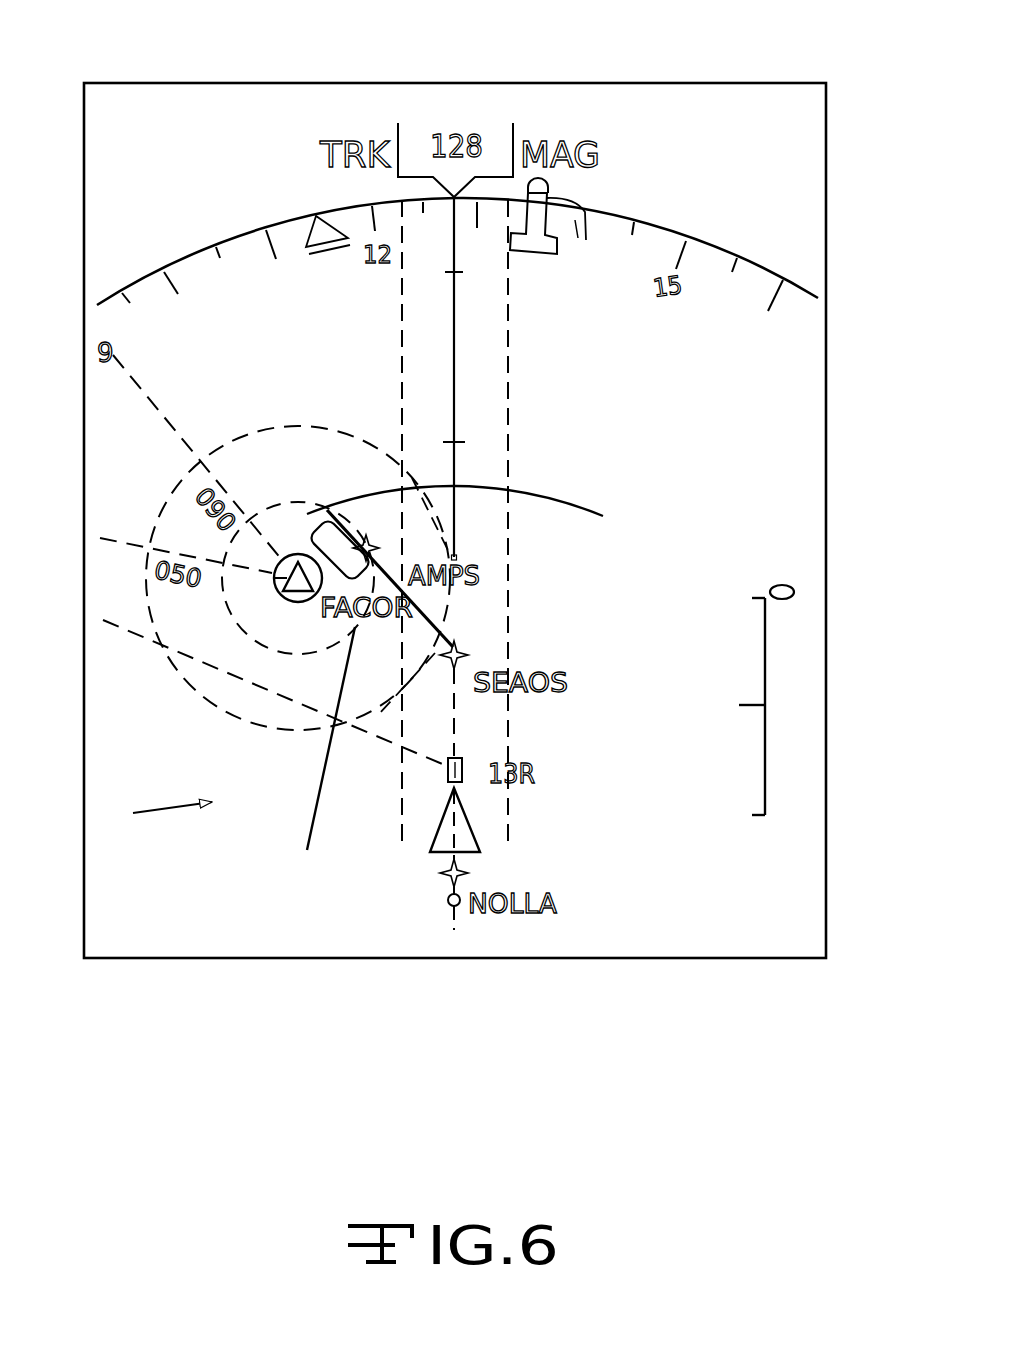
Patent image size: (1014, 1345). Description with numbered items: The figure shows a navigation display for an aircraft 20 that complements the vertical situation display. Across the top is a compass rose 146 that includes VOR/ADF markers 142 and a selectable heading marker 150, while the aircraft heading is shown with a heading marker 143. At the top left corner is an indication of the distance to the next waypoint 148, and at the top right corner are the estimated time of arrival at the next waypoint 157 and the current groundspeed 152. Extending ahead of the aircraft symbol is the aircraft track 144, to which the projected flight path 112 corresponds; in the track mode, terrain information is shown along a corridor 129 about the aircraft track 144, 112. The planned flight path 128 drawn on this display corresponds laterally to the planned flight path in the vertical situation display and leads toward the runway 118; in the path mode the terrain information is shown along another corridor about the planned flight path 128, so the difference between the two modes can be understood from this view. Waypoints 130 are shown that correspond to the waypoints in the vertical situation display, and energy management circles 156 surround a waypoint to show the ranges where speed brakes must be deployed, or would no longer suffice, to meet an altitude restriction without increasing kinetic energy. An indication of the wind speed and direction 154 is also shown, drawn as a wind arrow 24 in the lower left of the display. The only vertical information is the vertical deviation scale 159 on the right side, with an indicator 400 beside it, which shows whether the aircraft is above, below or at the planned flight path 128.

The compass rose 146 is at (614, 196).
The indication of the distance to the next waypoint 148 is at (160, 141).
The heading marker 143 is at (314, 218).
The estimated time of arrival at the next waypoint 157 is at (790, 157).
The current groundspeed 152 is at (786, 200).
The VOR/ADF markers 142 is at (557, 240).
The corridor 129 is at (404, 362).
The aircraft 20 is at (456, 440).
The aircraft track 144 is at (517, 483).
The projected flight path 112 is at (455, 478).
The energy management circles 156 is at (264, 652).
The selectable heading marker 150 is at (136, 634).
The waypoints 130 is at (465, 645).
The runway 118 is at (463, 763).
The planned flight path 128 is at (308, 810).
The indication of the wind speed and direction 154 is at (113, 794).
The wind arrow 24 is at (172, 826).
The vertical deviation scale 159 is at (769, 744).
The scale indicator 400 is at (767, 577).